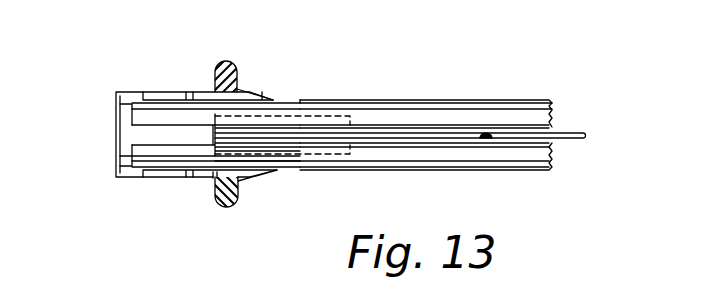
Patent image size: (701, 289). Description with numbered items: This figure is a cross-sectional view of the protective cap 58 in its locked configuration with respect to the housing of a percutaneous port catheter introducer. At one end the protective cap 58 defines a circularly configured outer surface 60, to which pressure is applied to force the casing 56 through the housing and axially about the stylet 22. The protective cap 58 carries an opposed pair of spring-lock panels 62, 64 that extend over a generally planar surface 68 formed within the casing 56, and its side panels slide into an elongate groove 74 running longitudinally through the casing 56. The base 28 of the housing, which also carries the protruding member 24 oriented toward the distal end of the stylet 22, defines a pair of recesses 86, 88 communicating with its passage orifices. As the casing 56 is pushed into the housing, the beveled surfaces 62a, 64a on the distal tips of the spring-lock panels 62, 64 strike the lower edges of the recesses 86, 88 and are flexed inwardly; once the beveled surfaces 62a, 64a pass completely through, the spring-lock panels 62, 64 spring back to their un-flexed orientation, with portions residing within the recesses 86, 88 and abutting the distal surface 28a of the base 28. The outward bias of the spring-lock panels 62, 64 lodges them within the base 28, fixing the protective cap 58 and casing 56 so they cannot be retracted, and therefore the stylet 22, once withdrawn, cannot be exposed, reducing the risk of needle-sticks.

The protective cap 58 is at (115, 152).
The circularly configured outer surface 60 is at (115, 115).
The spring-lock panel 62 is at (160, 92).
The beveled surface 62a is at (268, 84).
The generally planar surface 68 is at (182, 107).
The base 28 is at (234, 61).
The recess 86 is at (242, 90).
The casing 56 is at (484, 97).
The stylet 22 is at (565, 130).
The elongate groove 74 is at (486, 139).
The protruding member 24 is at (348, 150).
The spring-lock panel 64 is at (153, 178).
The beveled surface 64a is at (262, 178).
The recess 88 is at (213, 180).
The distal surface 28a is at (236, 206).